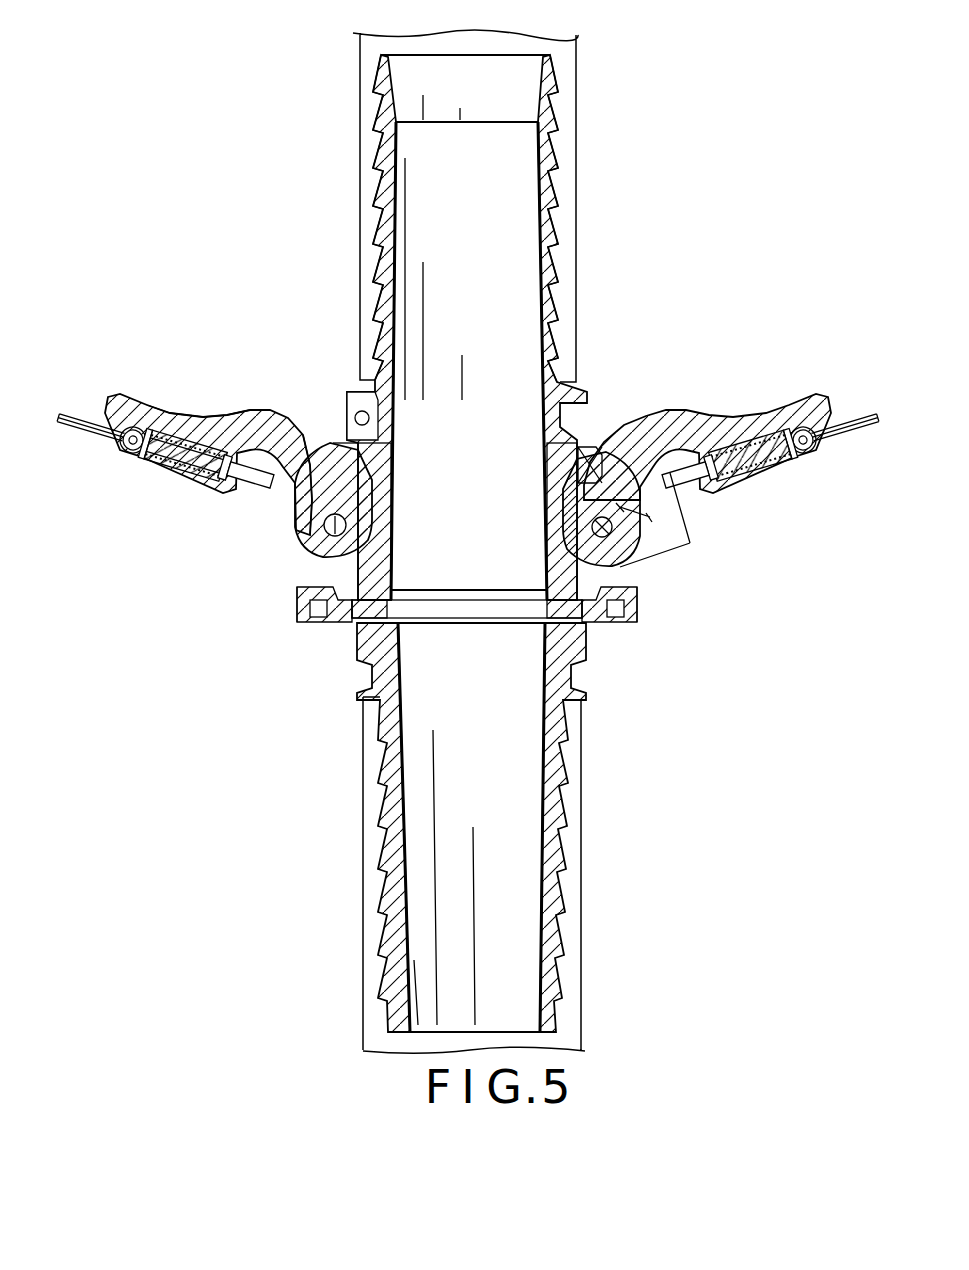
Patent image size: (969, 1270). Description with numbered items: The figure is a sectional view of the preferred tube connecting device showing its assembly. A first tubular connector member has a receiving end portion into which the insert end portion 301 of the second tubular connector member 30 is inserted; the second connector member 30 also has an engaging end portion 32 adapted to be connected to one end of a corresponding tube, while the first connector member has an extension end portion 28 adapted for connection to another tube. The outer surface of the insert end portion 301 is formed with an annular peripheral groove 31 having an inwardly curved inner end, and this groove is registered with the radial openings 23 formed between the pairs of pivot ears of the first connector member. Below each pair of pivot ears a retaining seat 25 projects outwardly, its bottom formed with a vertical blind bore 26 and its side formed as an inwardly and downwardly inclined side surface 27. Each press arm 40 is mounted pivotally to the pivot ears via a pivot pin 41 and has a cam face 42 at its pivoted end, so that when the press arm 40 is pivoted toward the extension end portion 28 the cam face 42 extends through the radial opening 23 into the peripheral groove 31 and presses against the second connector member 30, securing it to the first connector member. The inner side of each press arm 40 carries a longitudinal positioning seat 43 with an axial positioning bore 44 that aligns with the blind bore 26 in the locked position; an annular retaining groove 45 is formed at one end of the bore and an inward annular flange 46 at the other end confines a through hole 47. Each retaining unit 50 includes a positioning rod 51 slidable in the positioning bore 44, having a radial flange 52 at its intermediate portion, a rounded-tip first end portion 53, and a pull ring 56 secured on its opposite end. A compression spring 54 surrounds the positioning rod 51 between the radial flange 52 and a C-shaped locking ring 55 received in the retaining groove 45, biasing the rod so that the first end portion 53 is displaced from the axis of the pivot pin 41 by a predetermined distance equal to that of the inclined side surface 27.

The radial opening 23 is at (352, 485).
The retaining seat 25 is at (303, 602).
The vertical blind bore 26 is at (318, 614).
The inclined side surface 27 is at (297, 590).
The extension end portion 28 is at (565, 850).
The second tubular connector member 30 is at (556, 333).
The insert end portion 301 is at (590, 440).
The annular peripheral groove 31 is at (372, 525).
The engaging end portion 32 is at (556, 232).
The press arm 40 is at (286, 412).
The pivot pin 41 is at (310, 538).
The cam face 42 is at (317, 560).
The longitudinal positioning seat 43 is at (212, 490).
The axial positioning bore 44 is at (190, 432).
The annular retaining groove 45 is at (153, 437).
The inward annular flange 46 is at (236, 430).
The through hole 47 is at (230, 493).
The retaining unit 50 is at (118, 462).
The positioning rod 51 is at (200, 485).
The radial flange 52 is at (228, 487).
The first end portion 53 is at (255, 490).
The compression spring 54 is at (172, 473).
The C-shaped locking ring 55 is at (147, 478).
The pull ring 56 is at (87, 408).